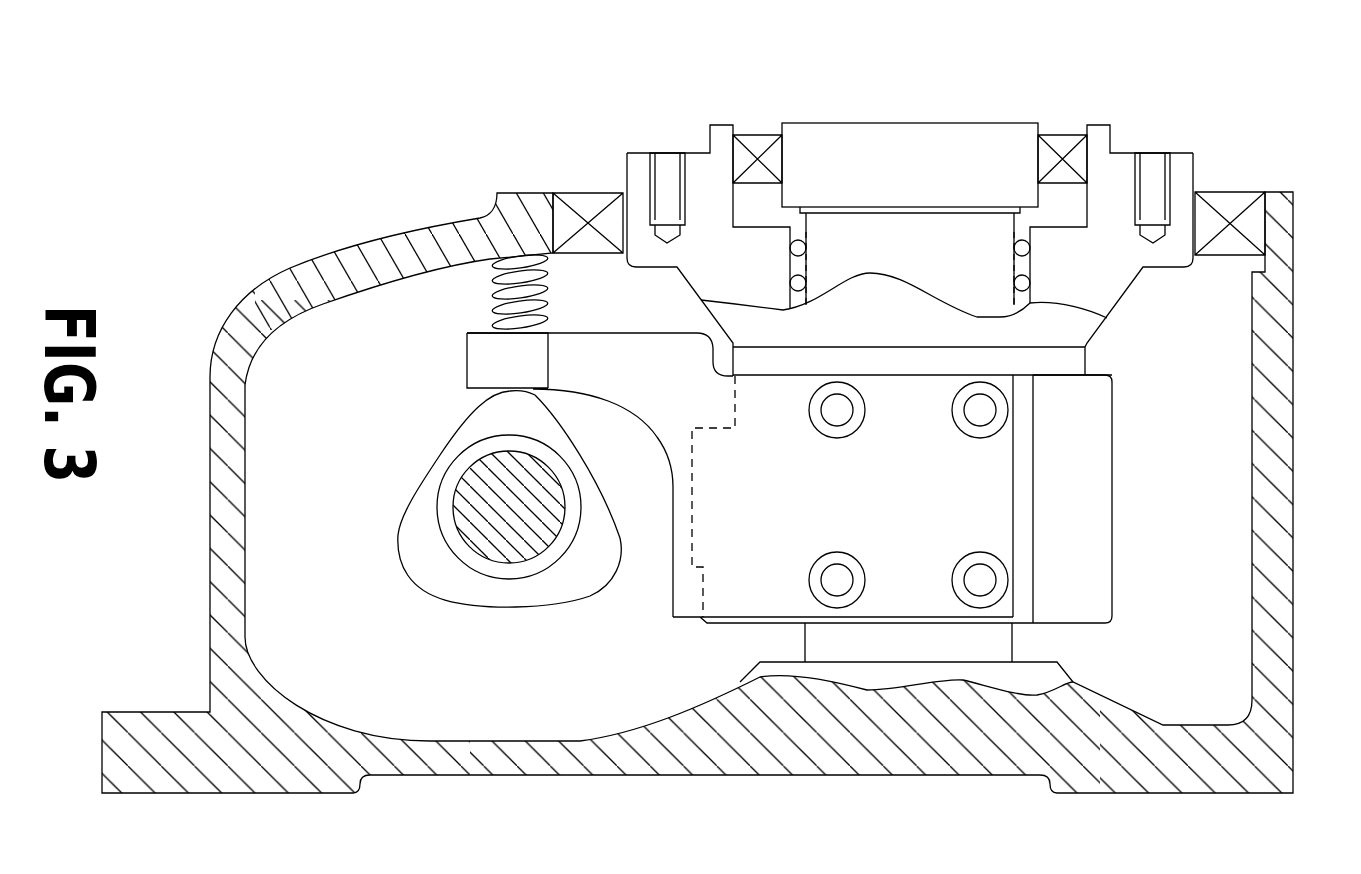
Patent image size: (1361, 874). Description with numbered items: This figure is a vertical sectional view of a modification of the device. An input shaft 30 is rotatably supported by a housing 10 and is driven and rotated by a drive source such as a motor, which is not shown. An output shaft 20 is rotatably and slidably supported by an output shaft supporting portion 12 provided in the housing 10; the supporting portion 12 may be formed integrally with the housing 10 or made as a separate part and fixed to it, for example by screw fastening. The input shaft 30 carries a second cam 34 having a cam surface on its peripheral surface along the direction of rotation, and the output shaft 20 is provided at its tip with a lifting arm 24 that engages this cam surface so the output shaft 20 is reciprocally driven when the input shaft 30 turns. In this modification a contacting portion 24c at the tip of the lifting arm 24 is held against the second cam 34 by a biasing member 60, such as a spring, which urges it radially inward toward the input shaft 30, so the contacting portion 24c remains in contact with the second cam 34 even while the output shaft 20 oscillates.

The housing 10 is at (1153, 773).
The output shaft supporting portion 12 is at (920, 140).
The output shaft 20 is at (1097, 483).
The lifting arm 24 is at (717, 557).
The portion of body 24c is at (547, 388).
The input shaft 30 is at (508, 532).
The second cam 34 is at (580, 567).
The biasing member 60 is at (520, 265).